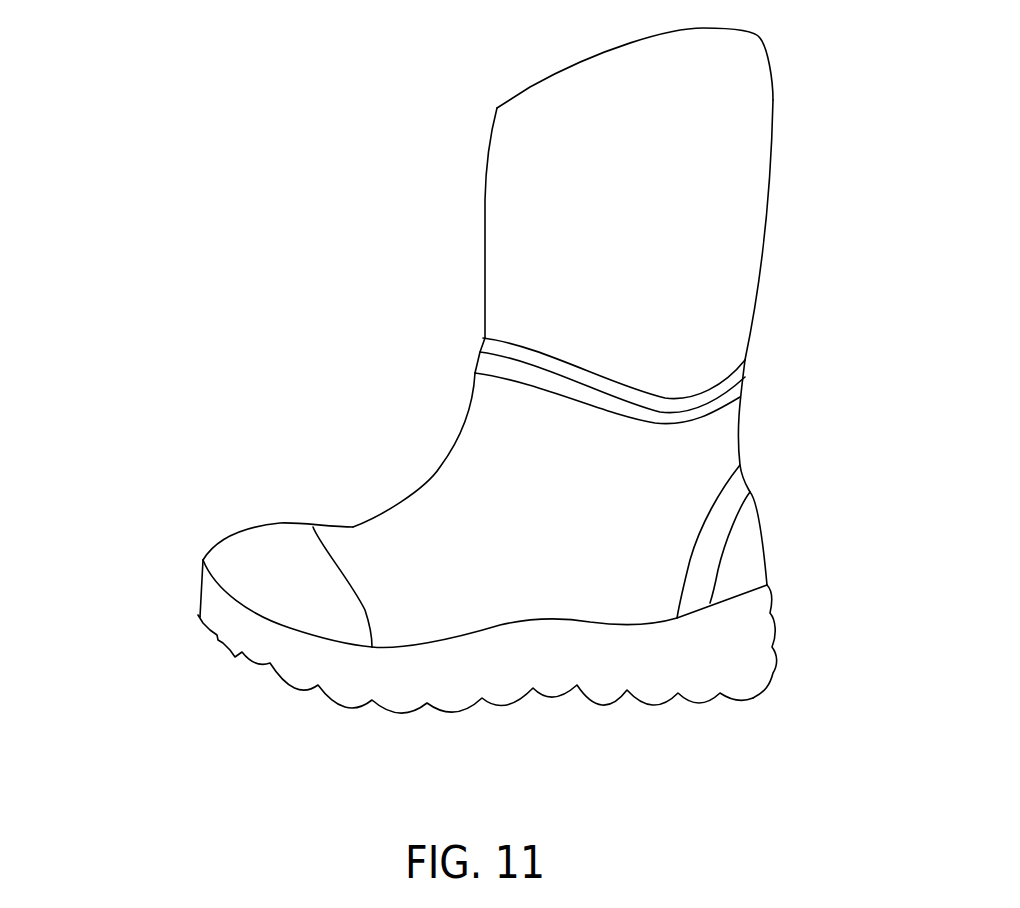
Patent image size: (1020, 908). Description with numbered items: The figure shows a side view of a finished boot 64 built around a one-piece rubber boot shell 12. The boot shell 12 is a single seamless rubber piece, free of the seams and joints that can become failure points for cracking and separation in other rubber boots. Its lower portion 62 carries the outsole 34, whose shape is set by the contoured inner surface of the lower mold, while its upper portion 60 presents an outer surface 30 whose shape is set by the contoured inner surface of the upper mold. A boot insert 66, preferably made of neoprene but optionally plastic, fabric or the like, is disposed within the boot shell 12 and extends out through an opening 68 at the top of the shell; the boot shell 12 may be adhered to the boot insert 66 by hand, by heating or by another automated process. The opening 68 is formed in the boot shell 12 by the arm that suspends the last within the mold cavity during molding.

The one-piece rubber boot shell 12 is at (322, 535).
The outer surface of the upper portion 30 is at (427, 500).
The outsole 34 is at (300, 673).
The upper portion 60 is at (490, 443).
The lower portion 62 is at (220, 613).
The boot 64 is at (378, 197).
The boot insert 66 is at (538, 90).
The opening 68 is at (687, 328).